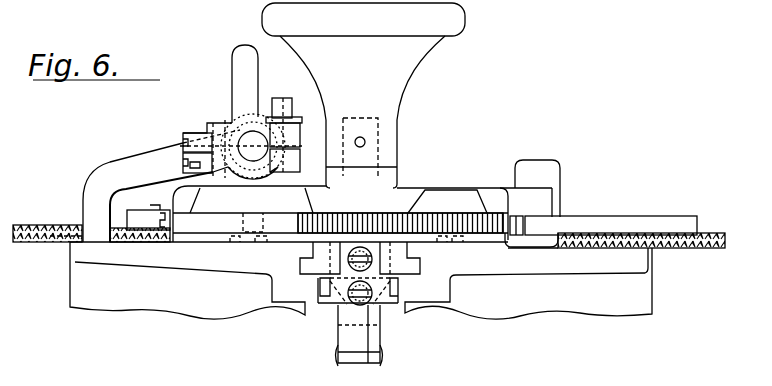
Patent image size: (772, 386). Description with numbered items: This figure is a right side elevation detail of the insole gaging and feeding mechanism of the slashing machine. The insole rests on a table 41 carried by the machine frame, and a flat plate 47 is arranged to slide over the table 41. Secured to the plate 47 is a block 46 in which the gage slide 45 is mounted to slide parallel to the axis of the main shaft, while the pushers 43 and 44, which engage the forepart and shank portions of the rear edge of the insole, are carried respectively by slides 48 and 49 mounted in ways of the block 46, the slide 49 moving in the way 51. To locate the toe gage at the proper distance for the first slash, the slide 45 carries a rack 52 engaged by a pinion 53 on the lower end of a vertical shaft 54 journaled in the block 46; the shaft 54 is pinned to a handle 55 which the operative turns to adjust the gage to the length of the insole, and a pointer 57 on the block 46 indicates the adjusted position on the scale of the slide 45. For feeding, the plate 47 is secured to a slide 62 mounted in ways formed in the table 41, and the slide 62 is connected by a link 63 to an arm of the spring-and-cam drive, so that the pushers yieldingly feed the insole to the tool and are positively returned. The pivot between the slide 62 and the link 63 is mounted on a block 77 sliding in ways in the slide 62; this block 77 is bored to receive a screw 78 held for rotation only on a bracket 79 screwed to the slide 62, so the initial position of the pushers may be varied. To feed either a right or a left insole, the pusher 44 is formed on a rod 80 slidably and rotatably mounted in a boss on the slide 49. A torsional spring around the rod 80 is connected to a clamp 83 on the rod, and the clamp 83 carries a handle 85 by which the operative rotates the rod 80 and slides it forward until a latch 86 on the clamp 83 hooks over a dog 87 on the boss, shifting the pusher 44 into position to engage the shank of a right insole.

The table 41 is at (88, 248).
The pusher 43 is at (541, 170).
The pusher 44 is at (96, 209).
The slide 45 is at (598, 224).
The block 46 is at (488, 193).
The flat plate 47 is at (495, 240).
The slide 48 is at (440, 192).
The slide 49 is at (292, 195).
The way 51 is at (365, 209).
The rack 52 is at (512, 225).
The pinion 53 is at (383, 217).
The vertical shaft 54 is at (372, 153).
The handle 55 is at (386, 88).
The pointer 57 is at (158, 203).
The slide 62 is at (413, 269).
The link 63 is at (340, 355).
The block 77 is at (329, 296).
The screw 78 is at (368, 313).
The bracket 79 is at (338, 306).
The rod 80 is at (254, 140).
The clamp 83 is at (220, 123).
The handle 85 is at (245, 63).
The latch 86 is at (200, 131).
The dog 87 is at (196, 167).